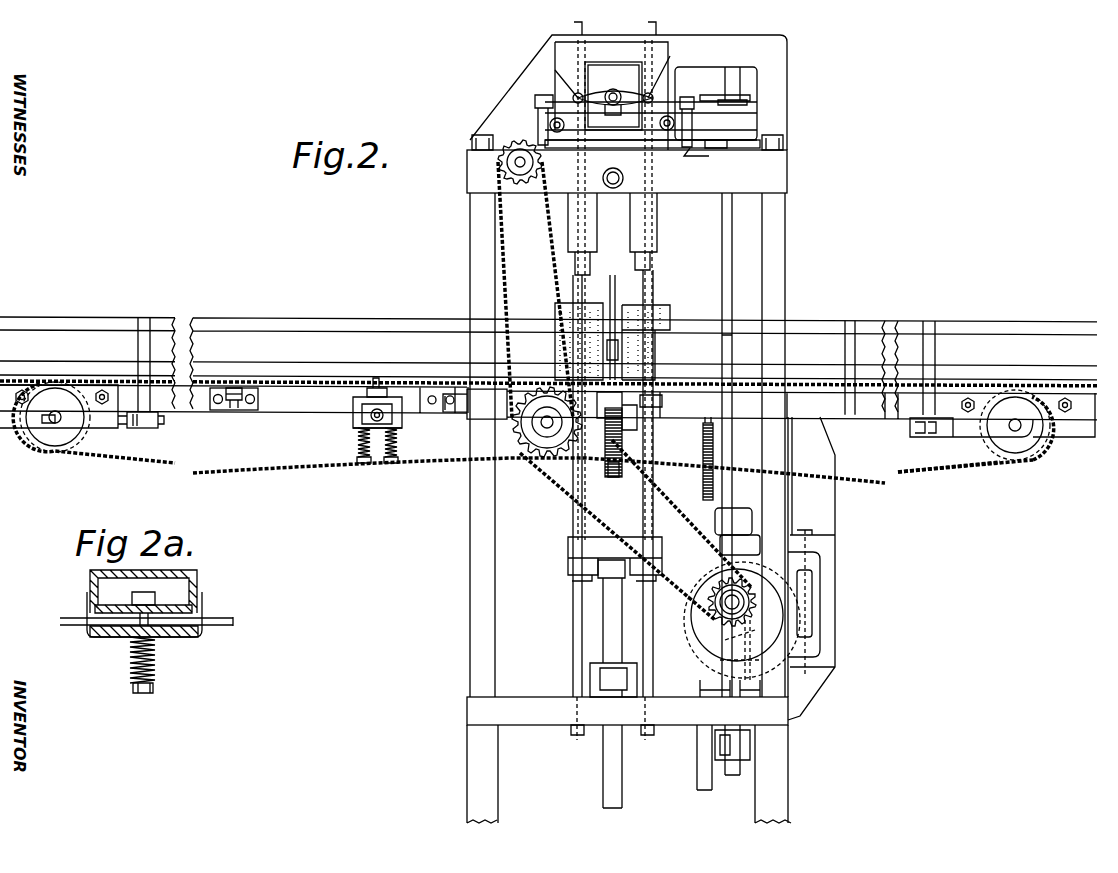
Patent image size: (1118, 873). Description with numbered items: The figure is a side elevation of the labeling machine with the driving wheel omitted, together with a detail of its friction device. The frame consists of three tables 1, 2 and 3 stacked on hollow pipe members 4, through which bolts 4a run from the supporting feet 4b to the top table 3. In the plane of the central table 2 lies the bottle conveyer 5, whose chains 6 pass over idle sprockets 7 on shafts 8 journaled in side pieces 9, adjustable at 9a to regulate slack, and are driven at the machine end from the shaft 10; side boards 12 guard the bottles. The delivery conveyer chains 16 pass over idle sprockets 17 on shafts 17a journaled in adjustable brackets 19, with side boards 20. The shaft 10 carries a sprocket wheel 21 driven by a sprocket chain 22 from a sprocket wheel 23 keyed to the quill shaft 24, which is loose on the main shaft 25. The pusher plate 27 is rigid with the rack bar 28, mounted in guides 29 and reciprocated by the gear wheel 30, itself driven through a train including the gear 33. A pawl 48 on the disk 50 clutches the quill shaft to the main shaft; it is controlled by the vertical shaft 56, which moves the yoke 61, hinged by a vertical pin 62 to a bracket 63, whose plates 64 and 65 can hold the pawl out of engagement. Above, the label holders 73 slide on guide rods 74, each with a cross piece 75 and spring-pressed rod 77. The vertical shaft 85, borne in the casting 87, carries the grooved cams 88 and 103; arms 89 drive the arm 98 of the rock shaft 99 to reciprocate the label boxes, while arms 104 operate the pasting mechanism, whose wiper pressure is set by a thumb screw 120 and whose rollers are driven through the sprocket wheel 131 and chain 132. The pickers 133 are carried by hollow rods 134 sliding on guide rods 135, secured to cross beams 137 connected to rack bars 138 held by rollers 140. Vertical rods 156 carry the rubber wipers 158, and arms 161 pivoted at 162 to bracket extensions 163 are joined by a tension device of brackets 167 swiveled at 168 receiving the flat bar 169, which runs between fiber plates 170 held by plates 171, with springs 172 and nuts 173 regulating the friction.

In FIG. 2, the lower table 1 is at (627, 743).
In FIG. 2, the central table 2 is at (770, 405).
In FIG. 2, the top table 3 is at (787, 172).
In FIG. 2, the hollow pipe members 4 is at (470, 270).
In FIG. 2, the bolts 4a is at (476, 135).
In FIG. 2, the supporting feet 4b is at (470, 745).
In FIG. 2, the bottle conveyer 5 is at (322, 404).
In FIG. 2A, the bottle conveyer 5 is at (197, 578).
In FIG. 2, the conveyer chains 6 is at (284, 378).
In FIG. 2, the idle sprockets 7 is at (40, 440).
In FIG. 2, the shafts 8 is at (50, 419).
In FIG. 2, the side pieces 9 is at (100, 420).
In FIG. 2, the adjustment 9a is at (140, 428).
In FIG. 2, the shaft 10 is at (613, 470).
In FIG. 2, the side boards 12 is at (244, 322).
In FIG. 2, the delivery conveyer chains 16 is at (955, 470).
In FIG. 2, the idle sprockets 17 is at (1010, 452).
In FIG. 2, the shafts 17a is at (1030, 455).
In FIG. 2, the adjustable brackets 19 is at (972, 436).
In FIG. 2, the side boards 20 is at (993, 322).
In FIG. 2, the sprocket wheel 21 is at (545, 440).
In FIG. 2, the sprocket chain 22 is at (575, 500).
In FIG. 2, the sprocket wheel 23 is at (710, 602).
In FIG. 2, the quill shaft 24 is at (722, 606).
In FIG. 2, the main shaft 25 is at (705, 635).
In FIG. 2, the pusher plate 27 is at (612, 276).
In FIG. 2, the rack bar 28 is at (662, 404).
In FIG. 2, the guides 29 is at (602, 442).
In FIG. 2, the gear wheel 30 is at (614, 475).
In FIG. 2, the gear 33 is at (703, 478).
In FIG. 2, the pawl 48 is at (805, 614).
In FIG. 2, the disk 50 is at (700, 575).
In FIG. 2, the vertical shaft 56 is at (714, 518).
In FIG. 2, the yoke 61 is at (822, 565).
In FIG. 2, the vertical pin 62 is at (812, 590).
In FIG. 2, the bracket 63 is at (832, 640).
In FIG. 2, the plate 64 is at (745, 665).
In FIG. 2, the plate 65 is at (730, 544).
In FIG. 2, the label holders 73 is at (613, 96).
In FIG. 2, the guide rods 74 is at (550, 127).
In FIG. 2, the cross piece 75 is at (602, 90).
In FIG. 2, the rod 77 is at (616, 90).
In FIG. 2, the vertical shaft 85 is at (732, 84).
In FIG. 2, the casting 87 is at (775, 67).
In FIG. 2, the grooved cam 88 is at (750, 110).
In FIG. 2, the arms 89 is at (706, 102).
In FIG. 2, the arm 98 is at (538, 108).
In FIG. 2, the rock shaft 99 is at (606, 145).
In FIG. 2, the grooved cam 103 is at (742, 128).
In FIG. 2, the arms 104 is at (712, 146).
In FIG. 2, the thumb screw 120 is at (572, 96).
In FIG. 2, the sprocket wheel 131 is at (532, 178).
In FIG. 2, the sprocket chain 132 is at (506, 259).
In FIG. 2, the pickers 133 is at (635, 216).
In FIG. 2, the hollow rods 134 is at (653, 279).
In FIG. 2, the vertical guide rods 135 is at (573, 600).
In FIG. 2, the cross beams 137 is at (568, 552).
In FIG. 2, the rack bars 138 is at (610, 630).
In FIG. 2, the rollers 140 is at (600, 672).
In FIG. 2, the vertical rods 156 is at (568, 226).
In FIG. 2, the rubber wipers 158 is at (590, 315).
In FIG. 2, the arms 161 is at (296, 380).
In FIG. 2, the pivot 162 is at (228, 404).
In FIG. 2, the bracket extensions 163 is at (240, 404).
In FIG. 2, the brackets 167 is at (360, 404).
In FIG. 2, the swivel 168 is at (380, 386).
In FIG. 2, the flat bar 169 is at (370, 418).
In FIG. 2A, the flat bar 169 is at (234, 620).
In FIG. 2, the fiber plates 170 is at (362, 432).
In FIG. 2A, the fiber plates 170 is at (110, 630).
In FIG. 2A, the plates 171 is at (118, 598).
In FIG. 2, the springs 172 is at (360, 452).
In FIG. 2A, the springs 172 is at (157, 668).
In FIG. 2, the nuts 173 is at (390, 466).
In FIG. 2A, the nuts 173 is at (154, 690).